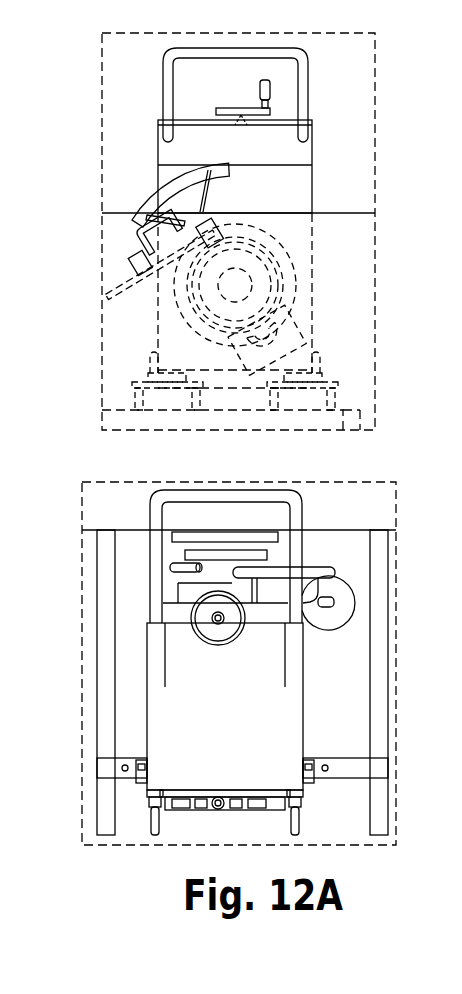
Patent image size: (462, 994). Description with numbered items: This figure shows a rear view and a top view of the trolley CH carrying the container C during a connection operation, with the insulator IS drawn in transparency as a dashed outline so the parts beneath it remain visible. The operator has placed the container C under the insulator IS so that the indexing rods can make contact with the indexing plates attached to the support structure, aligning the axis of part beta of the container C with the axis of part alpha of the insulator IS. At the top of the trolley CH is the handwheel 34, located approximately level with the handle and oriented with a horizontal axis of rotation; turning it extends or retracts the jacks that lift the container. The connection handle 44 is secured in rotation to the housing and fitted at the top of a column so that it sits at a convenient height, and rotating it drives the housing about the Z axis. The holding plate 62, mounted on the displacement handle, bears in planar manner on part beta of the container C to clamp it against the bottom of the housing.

The handwheel 34 is at (230, 113).
The connection handle 44 is at (180, 180).
The trolley CH is at (128, 176).
The insulator IS is at (352, 302).
The container C is at (190, 586).
The holding plate 62 is at (343, 610).